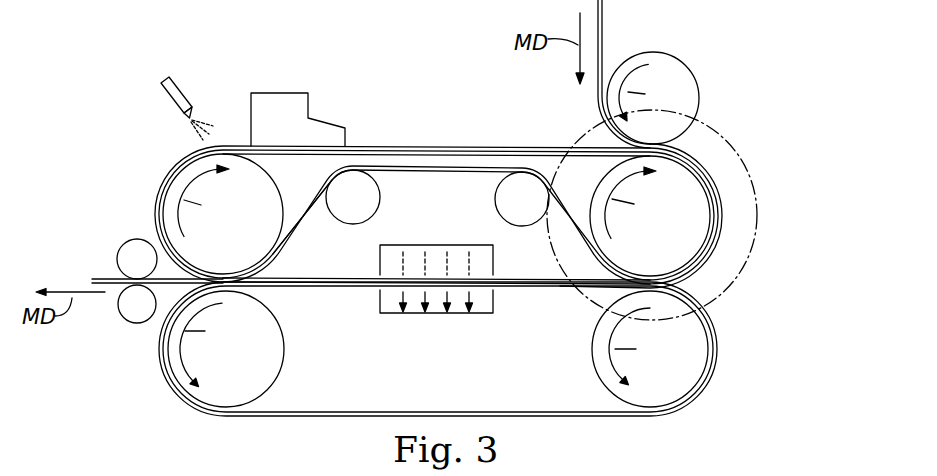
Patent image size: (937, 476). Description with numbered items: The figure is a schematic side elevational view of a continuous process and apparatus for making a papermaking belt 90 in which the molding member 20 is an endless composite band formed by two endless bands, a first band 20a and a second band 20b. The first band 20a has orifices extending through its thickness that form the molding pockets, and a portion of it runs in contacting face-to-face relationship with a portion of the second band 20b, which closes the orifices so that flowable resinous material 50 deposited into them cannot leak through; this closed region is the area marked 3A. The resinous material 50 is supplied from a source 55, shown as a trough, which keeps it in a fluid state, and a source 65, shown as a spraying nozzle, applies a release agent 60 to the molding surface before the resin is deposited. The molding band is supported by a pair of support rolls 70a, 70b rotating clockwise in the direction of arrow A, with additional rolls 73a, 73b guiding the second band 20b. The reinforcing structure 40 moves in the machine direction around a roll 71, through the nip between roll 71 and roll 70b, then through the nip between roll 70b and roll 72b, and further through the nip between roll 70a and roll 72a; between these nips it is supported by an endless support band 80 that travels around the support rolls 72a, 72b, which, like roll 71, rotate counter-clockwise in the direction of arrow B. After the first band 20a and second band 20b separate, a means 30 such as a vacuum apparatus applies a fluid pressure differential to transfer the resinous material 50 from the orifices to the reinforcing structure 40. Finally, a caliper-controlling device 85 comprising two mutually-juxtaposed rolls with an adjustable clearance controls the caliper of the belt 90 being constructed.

The molding member 20 is at (405, 147).
The first band 20a is at (533, 279).
The second band 20b is at (296, 229).
The means for creating and applying the fluid pressure differential 30 is at (413, 258).
The detail region 3A is at (725, 143).
The reinforcing structure 40 is at (603, 16).
The flowable resinous material 50 is at (318, 132).
The source 55 is at (278, 107).
The release agent 60 is at (190, 120).
The source of the release agent 65 is at (175, 92).
The support roll 70a is at (250, 188).
The support roll 70b is at (683, 208).
The roll 71 is at (678, 90).
The support roll 72a is at (255, 365).
The support roll 72b is at (685, 363).
The idler roller 73a is at (358, 198).
The idler roller 73b is at (508, 198).
The endless support band 80 is at (470, 412).
The caliper-controlling device 85 is at (137, 307).
The papermaking belt 90 is at (110, 277).